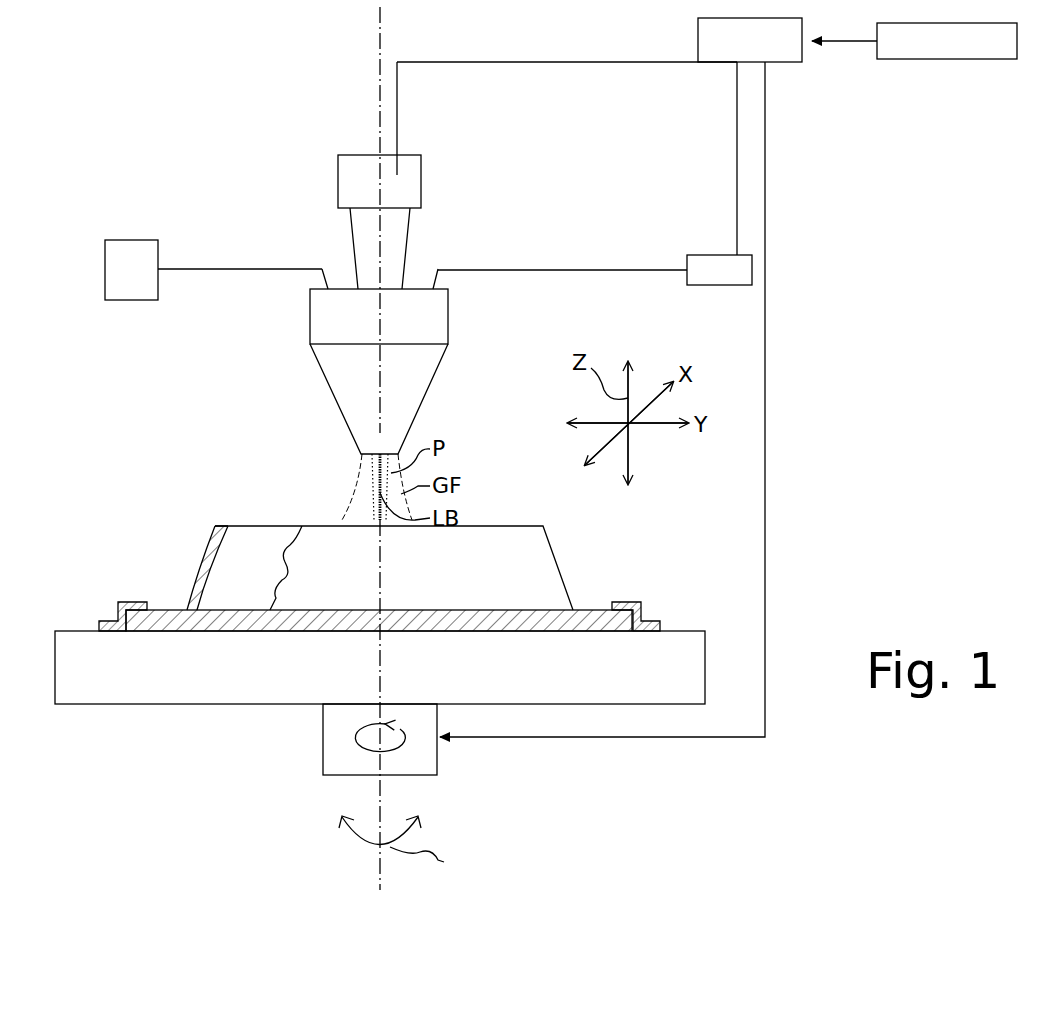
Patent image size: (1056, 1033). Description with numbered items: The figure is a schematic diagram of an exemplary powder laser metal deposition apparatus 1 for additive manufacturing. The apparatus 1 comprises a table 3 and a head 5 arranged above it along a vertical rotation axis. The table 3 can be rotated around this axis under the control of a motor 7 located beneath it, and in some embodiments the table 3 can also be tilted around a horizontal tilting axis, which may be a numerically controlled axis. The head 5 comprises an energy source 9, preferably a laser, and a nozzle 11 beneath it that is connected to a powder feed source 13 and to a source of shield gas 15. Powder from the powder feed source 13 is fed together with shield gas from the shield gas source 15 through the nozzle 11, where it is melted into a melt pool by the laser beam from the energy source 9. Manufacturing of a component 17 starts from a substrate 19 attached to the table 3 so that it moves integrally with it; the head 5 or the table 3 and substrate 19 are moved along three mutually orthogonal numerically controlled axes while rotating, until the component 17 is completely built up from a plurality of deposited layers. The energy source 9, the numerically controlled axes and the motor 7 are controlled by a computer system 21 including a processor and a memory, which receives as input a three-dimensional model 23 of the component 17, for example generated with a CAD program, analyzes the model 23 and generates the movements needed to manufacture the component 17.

The powder laser metal deposition apparatus 1 is at (288, 105).
The table 3 is at (664, 684).
The head 5 is at (458, 366).
The motor 7 is at (331, 746).
The energy source 9 is at (422, 170).
The nozzle 11 is at (343, 375).
The powder feed source 13 is at (213, 270).
The source of shield gas 15 is at (595, 270).
The component 17 is at (538, 568).
The substrate 19 is at (596, 618).
The computer system 21 is at (785, 48).
The three-dimensional model 23 is at (950, 59).